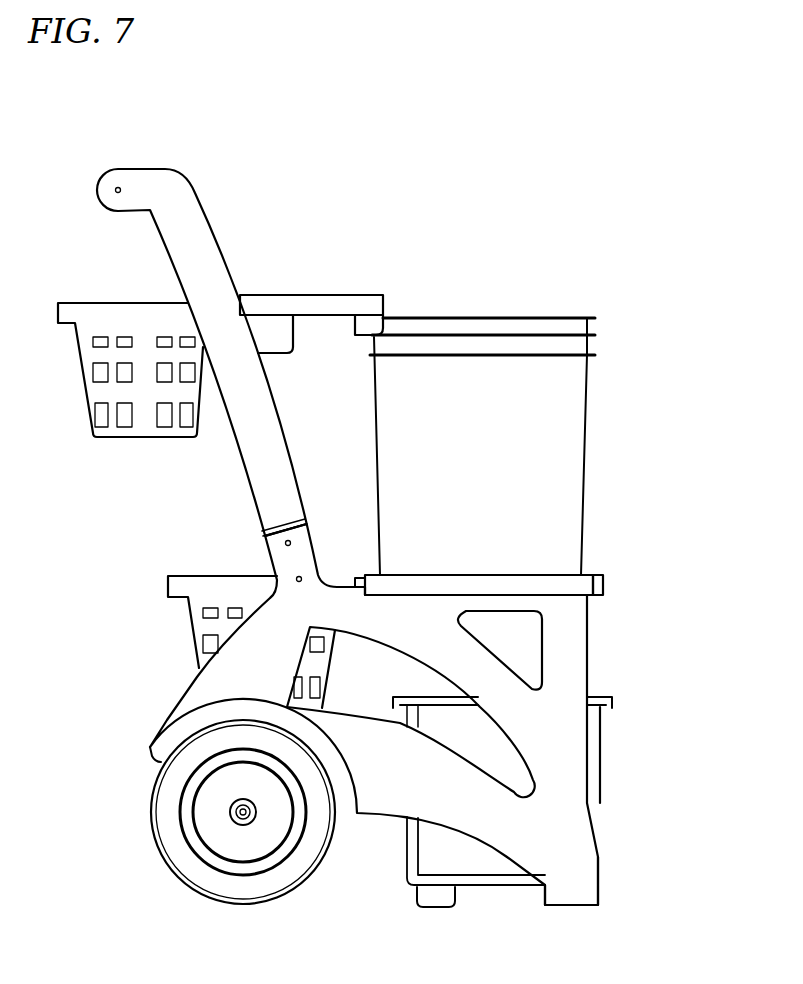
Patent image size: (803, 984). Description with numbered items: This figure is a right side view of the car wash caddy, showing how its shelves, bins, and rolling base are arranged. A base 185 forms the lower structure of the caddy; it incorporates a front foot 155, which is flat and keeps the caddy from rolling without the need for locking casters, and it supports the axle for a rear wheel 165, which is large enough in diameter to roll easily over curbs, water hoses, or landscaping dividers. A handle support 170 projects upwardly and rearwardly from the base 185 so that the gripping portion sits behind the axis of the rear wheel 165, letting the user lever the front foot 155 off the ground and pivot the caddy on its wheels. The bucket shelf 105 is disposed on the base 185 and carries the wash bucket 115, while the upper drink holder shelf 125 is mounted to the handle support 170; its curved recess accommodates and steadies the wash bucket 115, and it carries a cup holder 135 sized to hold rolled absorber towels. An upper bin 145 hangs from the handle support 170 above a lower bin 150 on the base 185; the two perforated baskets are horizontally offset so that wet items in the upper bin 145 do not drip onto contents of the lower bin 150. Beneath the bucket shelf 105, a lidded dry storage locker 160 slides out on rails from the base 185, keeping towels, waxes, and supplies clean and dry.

The handle support 170 is at (190, 247).
The upper bin 145 is at (93, 313).
The upper shelf 125 is at (345, 305).
The cup holder 135 is at (270, 330).
The wash bucket 115 is at (553, 420).
The bucket shelf 105 is at (563, 587).
The lower bin 150 is at (202, 585).
The base 185 is at (567, 662).
The dry storage locker 160 is at (602, 772).
The rear wheel 165 is at (168, 835).
The front foot 155 is at (567, 893).